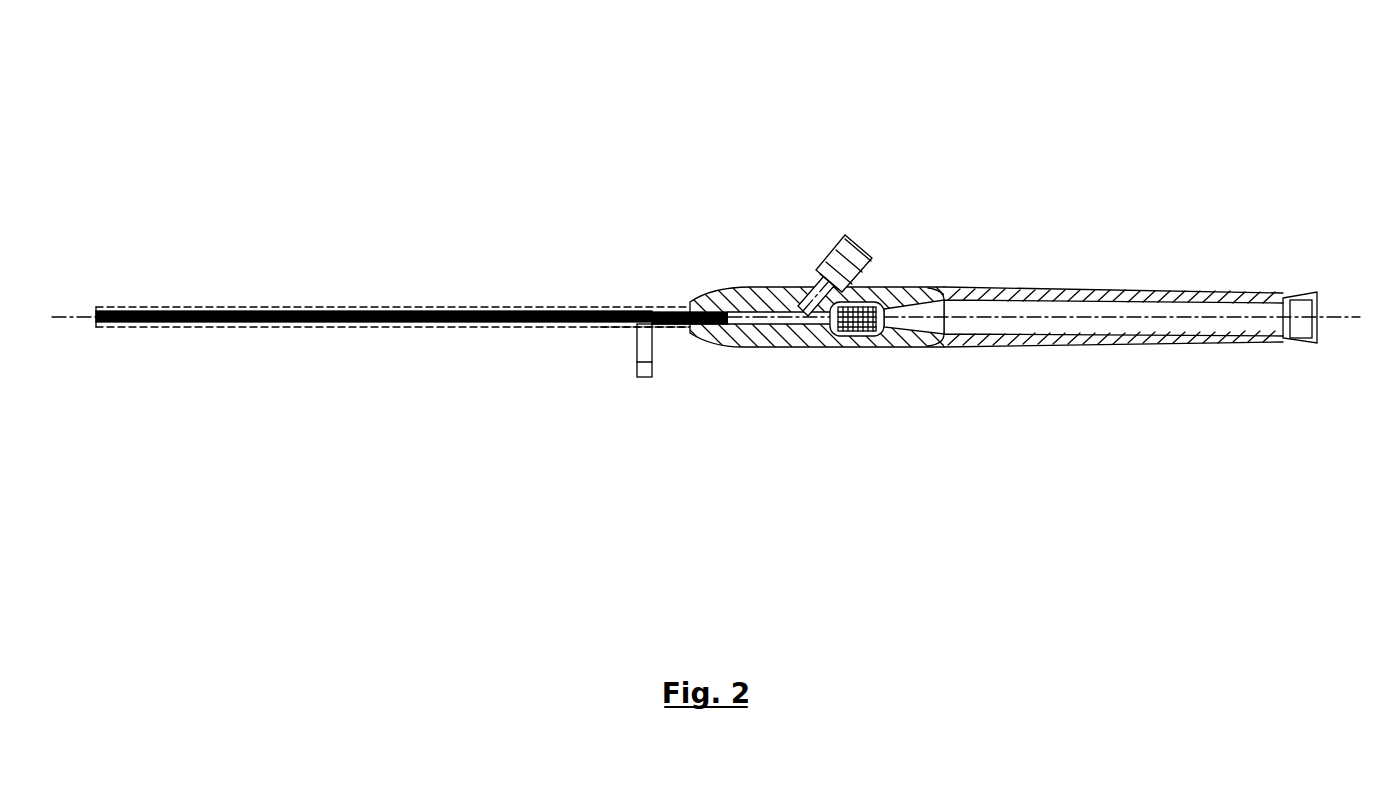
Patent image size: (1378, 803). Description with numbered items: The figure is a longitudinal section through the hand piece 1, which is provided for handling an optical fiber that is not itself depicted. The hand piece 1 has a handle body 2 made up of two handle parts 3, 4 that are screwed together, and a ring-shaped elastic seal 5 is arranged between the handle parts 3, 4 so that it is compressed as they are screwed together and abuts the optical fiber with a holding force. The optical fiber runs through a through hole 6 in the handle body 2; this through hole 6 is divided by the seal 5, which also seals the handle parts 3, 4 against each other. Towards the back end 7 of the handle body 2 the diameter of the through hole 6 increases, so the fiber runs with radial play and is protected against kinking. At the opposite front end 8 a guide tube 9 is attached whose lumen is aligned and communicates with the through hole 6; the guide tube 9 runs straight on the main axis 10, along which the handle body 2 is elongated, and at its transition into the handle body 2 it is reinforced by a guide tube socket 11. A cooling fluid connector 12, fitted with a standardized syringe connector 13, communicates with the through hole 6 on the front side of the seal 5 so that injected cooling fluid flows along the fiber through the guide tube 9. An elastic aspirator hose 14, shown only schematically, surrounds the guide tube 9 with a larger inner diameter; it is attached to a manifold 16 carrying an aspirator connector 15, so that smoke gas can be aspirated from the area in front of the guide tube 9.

The hand piece 1 is at (1167, 145).
The handle body 2 is at (759, 269).
The handle part 3 is at (723, 297).
The handle part 4 is at (950, 300).
The ring-shaped elastic seal 5 is at (870, 308).
The through hole 6 is at (1070, 310).
The back end 7 is at (1323, 299).
The front end 8 is at (685, 341).
The guide tube 9 is at (455, 308).
The main axis 10 is at (52, 317).
The guide tube socket 11 is at (668, 309).
The cooling fluid connector 12 is at (826, 243).
The standardized syringe connector 13 is at (864, 237).
The aspirator hose 14 is at (337, 303).
The aspirator connector 15 is at (630, 364).
The manifold 16 is at (618, 333).